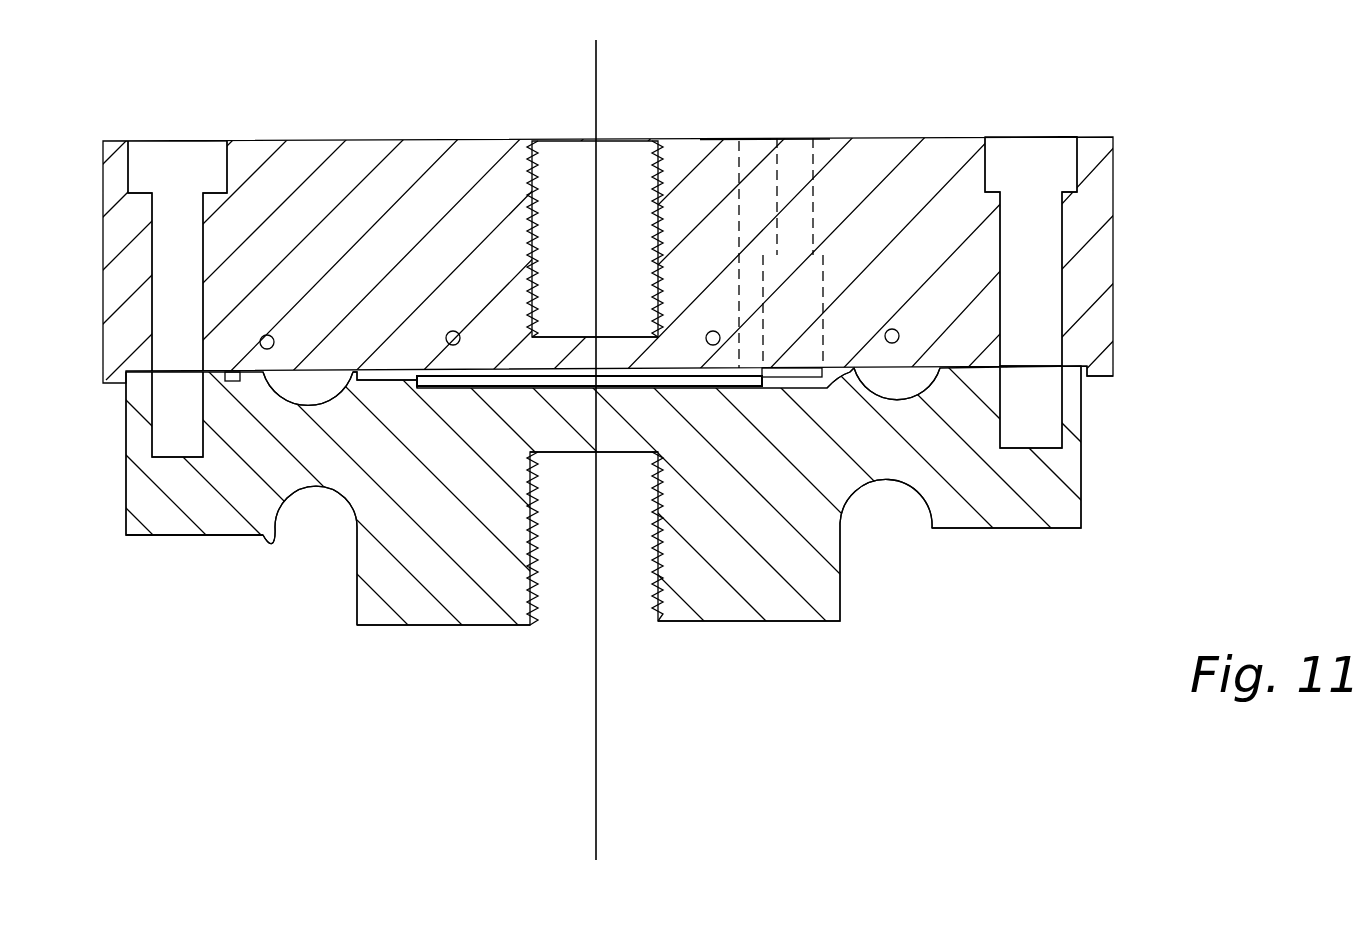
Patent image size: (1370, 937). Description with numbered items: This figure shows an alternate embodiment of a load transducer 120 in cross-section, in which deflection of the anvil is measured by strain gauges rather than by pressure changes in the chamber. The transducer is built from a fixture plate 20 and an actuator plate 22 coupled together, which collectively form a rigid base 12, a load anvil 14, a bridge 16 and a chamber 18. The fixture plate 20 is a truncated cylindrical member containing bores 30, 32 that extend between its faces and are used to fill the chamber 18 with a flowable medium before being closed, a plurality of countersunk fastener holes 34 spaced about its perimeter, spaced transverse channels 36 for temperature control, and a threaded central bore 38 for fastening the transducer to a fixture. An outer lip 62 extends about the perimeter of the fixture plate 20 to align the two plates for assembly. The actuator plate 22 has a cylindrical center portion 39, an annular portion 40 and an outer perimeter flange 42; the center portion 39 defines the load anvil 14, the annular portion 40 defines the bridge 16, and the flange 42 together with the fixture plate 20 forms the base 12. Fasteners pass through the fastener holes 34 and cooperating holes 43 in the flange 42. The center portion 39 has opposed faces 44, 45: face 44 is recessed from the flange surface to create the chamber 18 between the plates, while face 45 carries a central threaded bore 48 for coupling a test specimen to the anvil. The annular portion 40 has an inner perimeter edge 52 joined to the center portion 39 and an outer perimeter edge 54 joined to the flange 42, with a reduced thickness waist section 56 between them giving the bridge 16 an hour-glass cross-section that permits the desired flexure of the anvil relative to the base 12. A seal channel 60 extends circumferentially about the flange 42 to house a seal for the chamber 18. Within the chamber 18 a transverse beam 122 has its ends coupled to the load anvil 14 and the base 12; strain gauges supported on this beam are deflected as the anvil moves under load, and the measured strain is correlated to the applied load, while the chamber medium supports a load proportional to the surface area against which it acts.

The rigid base 12 is at (657, 352).
The load anvil 14 is at (635, 386).
The bridge 16 is at (305, 475).
The chamber 18 is at (344, 392).
The fixture plate 20 is at (657, 202).
The actuator plate 22 is at (1057, 500).
The bore 30 is at (800, 137).
The bore 32 is at (752, 136).
The countersunk fastener holes 34 is at (170, 178).
The transverse channels 36 is at (259, 331).
The threaded central bore 38 is at (600, 194).
The cylindrical center portion 39 is at (748, 563).
The annular portion 40 is at (892, 488).
The outer perimeter flange 42 is at (140, 538).
The holes 43 is at (150, 440).
The face 44 is at (832, 381).
The face 45 is at (482, 627).
The central threaded bore 48 is at (605, 507).
The inner perimeter edge 52 is at (367, 487).
The outer perimeter edge 54 is at (276, 527).
The reduced thickness waist section 56 is at (308, 460).
The seal channel 60 is at (968, 373).
The outer lip 62 is at (1108, 372).
The load transducer 120 is at (764, 128).
The transverse beam 122 is at (547, 372).